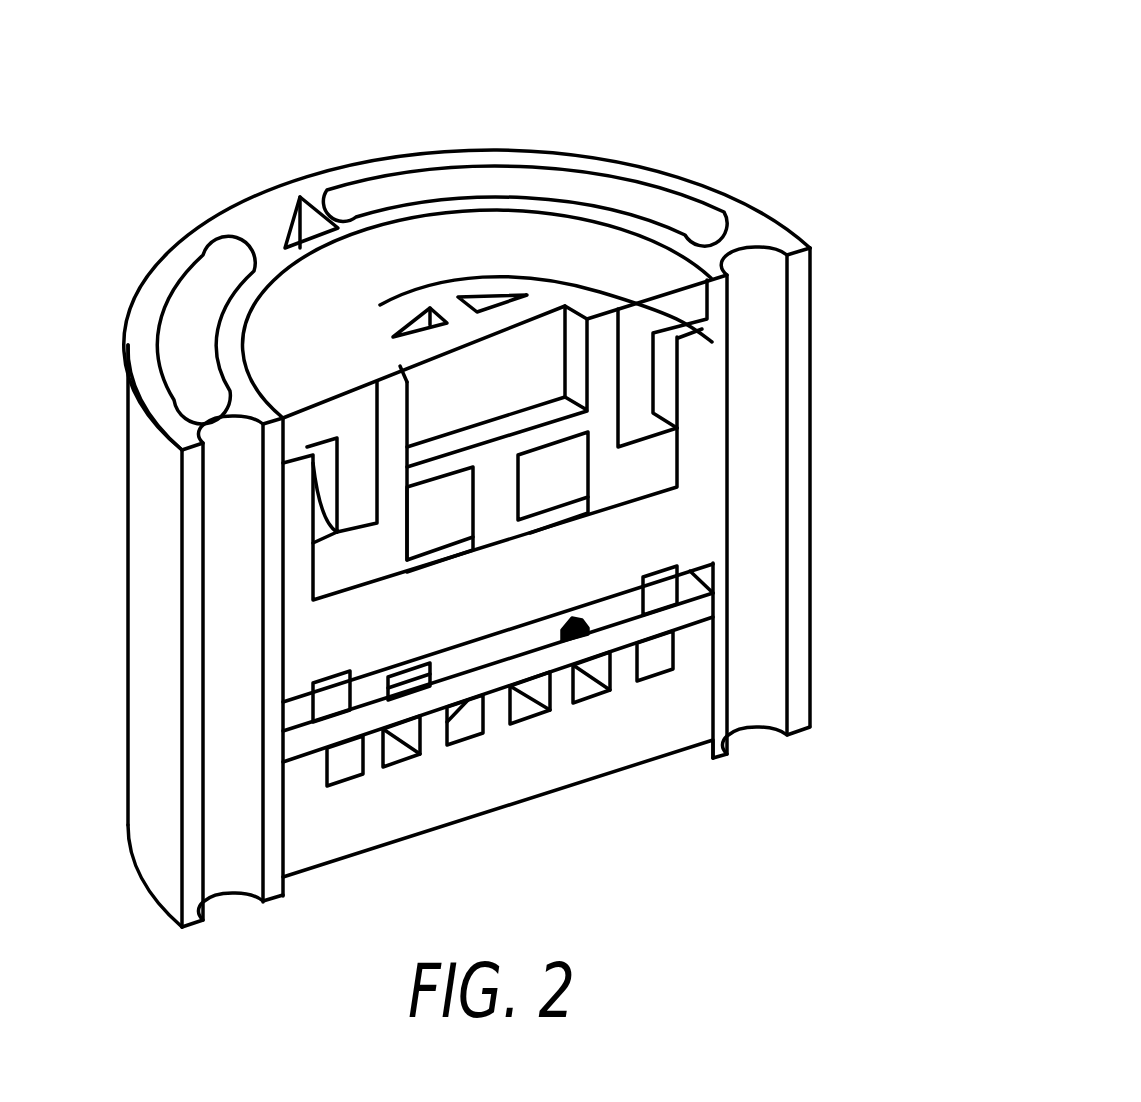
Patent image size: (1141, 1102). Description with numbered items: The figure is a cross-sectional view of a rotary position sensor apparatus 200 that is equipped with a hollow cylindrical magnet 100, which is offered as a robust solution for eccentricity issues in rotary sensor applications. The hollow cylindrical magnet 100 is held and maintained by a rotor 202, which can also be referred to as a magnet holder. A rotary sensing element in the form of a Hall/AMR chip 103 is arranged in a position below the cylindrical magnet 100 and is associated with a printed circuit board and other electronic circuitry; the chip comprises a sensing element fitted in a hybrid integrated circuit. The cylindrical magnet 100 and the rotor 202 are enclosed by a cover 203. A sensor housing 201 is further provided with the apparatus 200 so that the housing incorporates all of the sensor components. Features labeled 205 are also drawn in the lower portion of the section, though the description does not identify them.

The rotary position sensor apparatus 200 is at (812, 88).
The sensor housing 201 is at (765, 368).
The rotor 202 is at (502, 364).
The cover 203 is at (318, 310).
The hollow cylindrical magnet 100 is at (557, 482).
The Hall/AMR chip 103 is at (522, 645).
The pins 205 is at (597, 680).